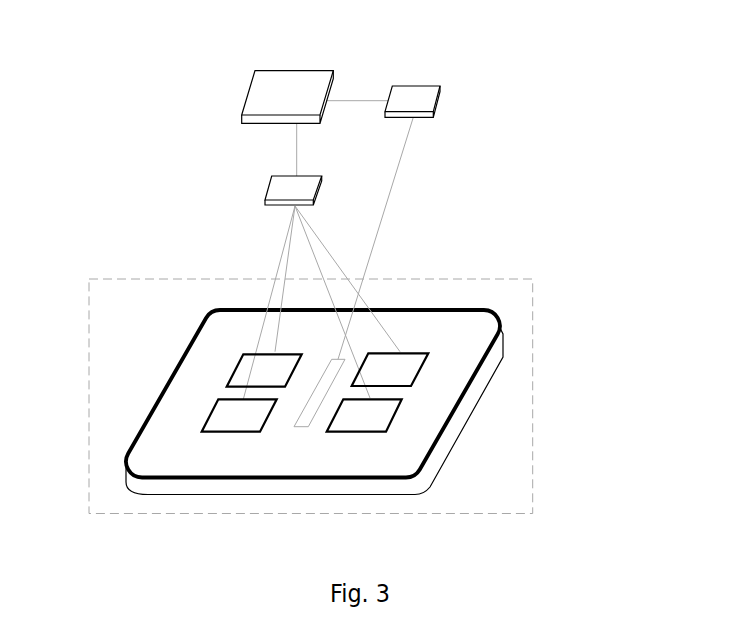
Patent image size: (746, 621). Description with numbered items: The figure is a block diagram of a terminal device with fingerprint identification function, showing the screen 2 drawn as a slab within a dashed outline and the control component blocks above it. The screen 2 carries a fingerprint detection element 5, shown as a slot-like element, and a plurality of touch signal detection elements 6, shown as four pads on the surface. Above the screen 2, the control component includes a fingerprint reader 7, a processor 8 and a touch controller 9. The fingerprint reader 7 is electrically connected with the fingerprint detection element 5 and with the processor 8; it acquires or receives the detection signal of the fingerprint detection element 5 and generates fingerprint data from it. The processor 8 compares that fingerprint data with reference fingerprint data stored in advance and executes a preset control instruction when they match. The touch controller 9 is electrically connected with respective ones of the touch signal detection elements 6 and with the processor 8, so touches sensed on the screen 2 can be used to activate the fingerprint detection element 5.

The screen 2 is at (533, 379).
The fingerprint detection element 5 is at (294, 427).
The touch signal detection element 6 is at (420, 372).
The fingerprint reader 7 is at (423, 117).
The processor 8 is at (320, 70).
The touch controller 9 is at (270, 185).